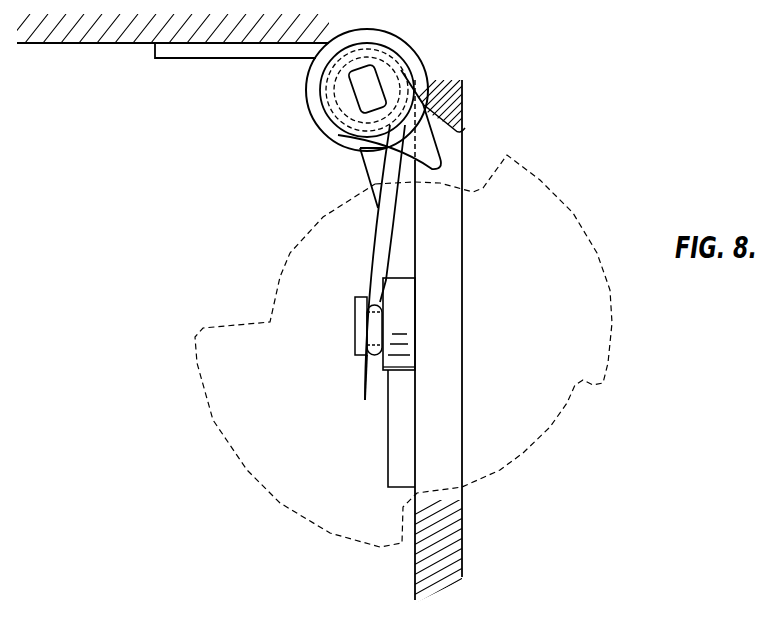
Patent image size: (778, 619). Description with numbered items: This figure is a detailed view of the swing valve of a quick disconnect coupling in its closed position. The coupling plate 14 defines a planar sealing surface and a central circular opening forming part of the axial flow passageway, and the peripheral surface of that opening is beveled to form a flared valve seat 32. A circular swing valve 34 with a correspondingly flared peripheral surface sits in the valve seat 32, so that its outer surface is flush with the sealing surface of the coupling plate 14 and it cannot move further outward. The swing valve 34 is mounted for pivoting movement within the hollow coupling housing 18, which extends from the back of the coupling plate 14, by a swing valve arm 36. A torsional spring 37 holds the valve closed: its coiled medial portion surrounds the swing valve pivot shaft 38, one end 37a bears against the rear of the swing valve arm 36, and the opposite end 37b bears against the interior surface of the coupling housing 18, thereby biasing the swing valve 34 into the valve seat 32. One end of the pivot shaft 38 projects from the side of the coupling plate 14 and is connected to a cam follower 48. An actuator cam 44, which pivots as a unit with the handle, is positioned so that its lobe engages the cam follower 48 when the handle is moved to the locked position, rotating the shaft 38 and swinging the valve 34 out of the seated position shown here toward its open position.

The coupling plate 14 is at (442, 568).
The coupling housing 18 is at (100, 33).
The valve seat 32 is at (458, 128).
The swing valve 34 is at (444, 375).
The swing valve arm 36 is at (407, 262).
The torsional spring 37 is at (387, 170).
The spring end 37a is at (365, 400).
The spring end 37b is at (213, 52).
The swing valve pivot shaft 38 is at (373, 90).
The actuator cam 44 is at (525, 197).
The cam follower 48 is at (427, 152).